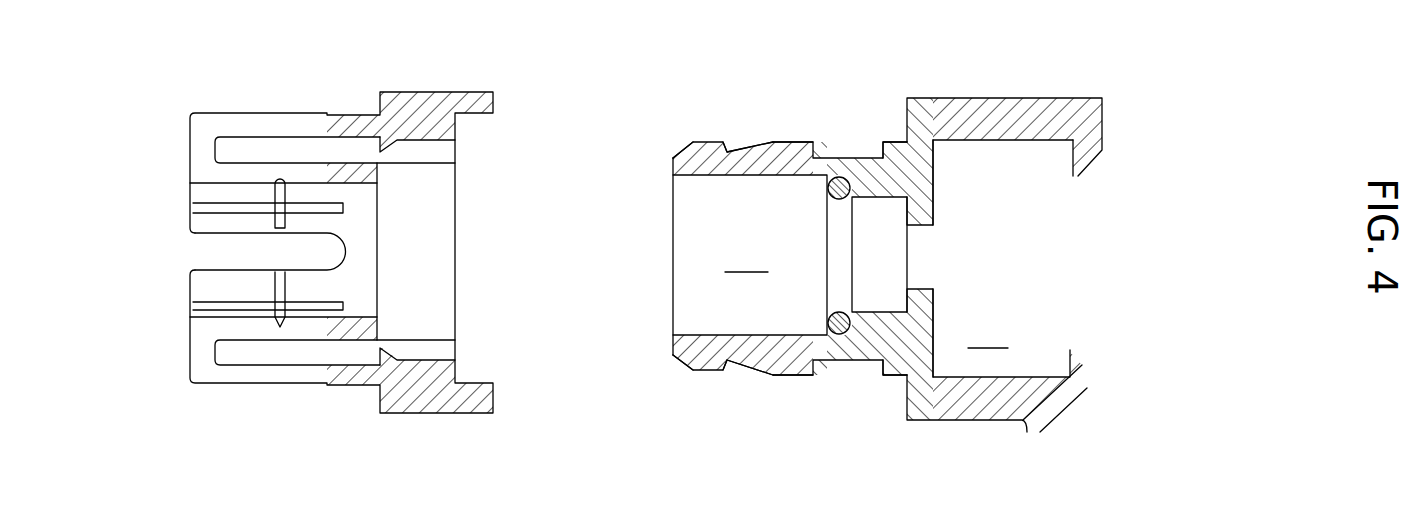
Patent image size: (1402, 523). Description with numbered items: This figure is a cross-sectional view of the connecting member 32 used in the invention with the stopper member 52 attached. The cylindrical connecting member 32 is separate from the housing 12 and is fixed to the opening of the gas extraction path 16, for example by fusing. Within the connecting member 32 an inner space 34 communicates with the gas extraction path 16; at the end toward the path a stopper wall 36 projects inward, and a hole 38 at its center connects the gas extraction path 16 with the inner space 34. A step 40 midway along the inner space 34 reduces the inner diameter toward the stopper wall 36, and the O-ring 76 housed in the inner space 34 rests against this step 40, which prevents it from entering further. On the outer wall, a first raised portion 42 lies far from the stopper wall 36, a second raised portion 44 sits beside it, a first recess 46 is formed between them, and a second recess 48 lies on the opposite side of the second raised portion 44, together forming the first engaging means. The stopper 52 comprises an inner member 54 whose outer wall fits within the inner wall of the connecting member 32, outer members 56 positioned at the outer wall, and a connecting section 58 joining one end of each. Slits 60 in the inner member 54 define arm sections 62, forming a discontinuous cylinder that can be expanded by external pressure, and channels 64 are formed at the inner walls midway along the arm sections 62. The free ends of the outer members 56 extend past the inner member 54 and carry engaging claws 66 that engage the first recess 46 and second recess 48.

The housing 12 is at (1023, 120).
The gas extraction path 16 is at (970, 333).
The connecting member 32 is at (746, 387).
The inner space 34 is at (750, 255).
The stopper wall 36 is at (935, 198).
The hole 38 is at (918, 257).
The step 40 is at (833, 338).
The first raised portion 42 is at (710, 140).
The second raised portion 44 is at (800, 140).
The first recess 46 is at (743, 140).
The second recess 48 is at (865, 155).
The stopper member 52 is at (394, 424).
The inner member 54 is at (343, 174).
The outer member 56 is at (388, 96).
The connecting section 58 is at (203, 144).
The slits 60 is at (195, 205).
The arm sections 62 is at (248, 180).
The channels 64 is at (288, 225).
The engaging claws 66 is at (393, 147).
The O-ring 76 is at (833, 178).